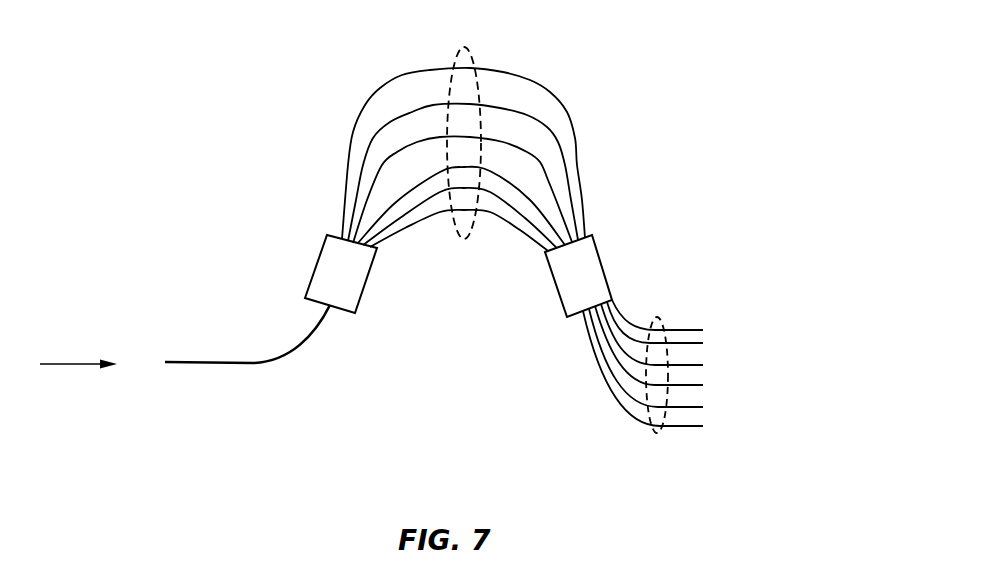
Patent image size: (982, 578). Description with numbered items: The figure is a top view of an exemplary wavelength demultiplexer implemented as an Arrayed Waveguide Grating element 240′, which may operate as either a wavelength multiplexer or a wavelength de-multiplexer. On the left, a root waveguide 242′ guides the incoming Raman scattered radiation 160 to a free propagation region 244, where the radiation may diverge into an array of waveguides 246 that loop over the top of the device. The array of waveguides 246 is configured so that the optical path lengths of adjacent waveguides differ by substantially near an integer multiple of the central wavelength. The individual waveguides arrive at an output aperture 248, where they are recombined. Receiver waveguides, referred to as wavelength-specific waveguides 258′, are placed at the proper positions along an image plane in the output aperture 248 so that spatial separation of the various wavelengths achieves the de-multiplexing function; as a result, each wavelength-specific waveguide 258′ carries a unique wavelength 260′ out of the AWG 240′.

The arrayed waveguide grating element 240′ is at (243, 103).
The array of waveguides 246 is at (474, 52).
The free propagation region 244 is at (316, 267).
The output aperture 248 is at (599, 257).
The Raman scattered radiation 160 is at (82, 362).
The root waveguide 242′ is at (247, 362).
The unique wavelength 260′ is at (812, 368).
The wavelength-specific waveguides 258′ is at (658, 440).